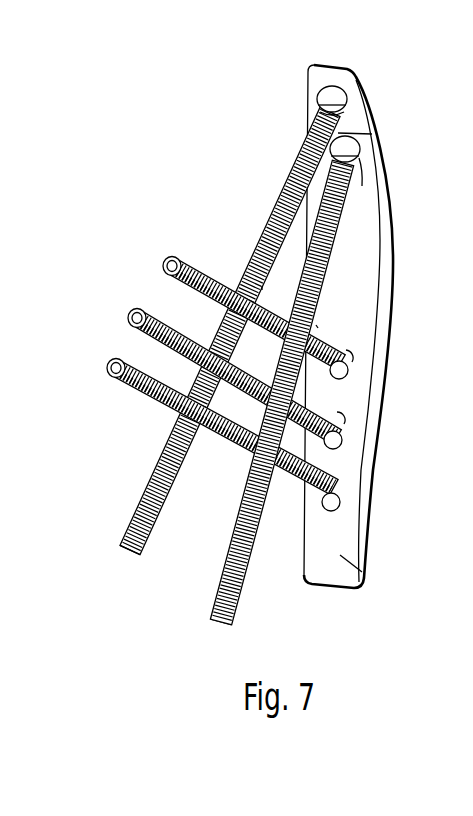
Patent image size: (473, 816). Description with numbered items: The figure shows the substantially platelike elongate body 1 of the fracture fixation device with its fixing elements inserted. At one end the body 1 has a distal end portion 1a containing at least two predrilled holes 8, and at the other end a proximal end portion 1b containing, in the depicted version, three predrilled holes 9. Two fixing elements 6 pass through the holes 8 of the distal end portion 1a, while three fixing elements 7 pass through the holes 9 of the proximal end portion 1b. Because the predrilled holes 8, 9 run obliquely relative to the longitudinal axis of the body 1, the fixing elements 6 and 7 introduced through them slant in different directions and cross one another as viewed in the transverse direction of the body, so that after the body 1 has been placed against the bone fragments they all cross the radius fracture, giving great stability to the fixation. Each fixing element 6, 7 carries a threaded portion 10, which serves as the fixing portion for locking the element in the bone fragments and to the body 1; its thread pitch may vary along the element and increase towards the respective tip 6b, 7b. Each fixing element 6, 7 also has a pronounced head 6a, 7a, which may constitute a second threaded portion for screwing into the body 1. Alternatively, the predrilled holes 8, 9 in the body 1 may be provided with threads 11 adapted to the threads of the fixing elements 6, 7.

The elongate body 1 is at (406, 262).
The distal end portion 1a is at (375, 126).
The proximal end portion 1b is at (362, 570).
The fixing element 6 is at (288, 270).
The head 6a is at (322, 104).
The tip 6b is at (219, 628).
The fixing element 7 is at (103, 362).
The head 7a is at (341, 448).
The tip 7b is at (166, 262).
The predrilled hole 8 is at (347, 113).
The predrilled hole 9 is at (348, 356).
The threaded portion 10 is at (280, 288).
The threads 11 is at (358, 178).